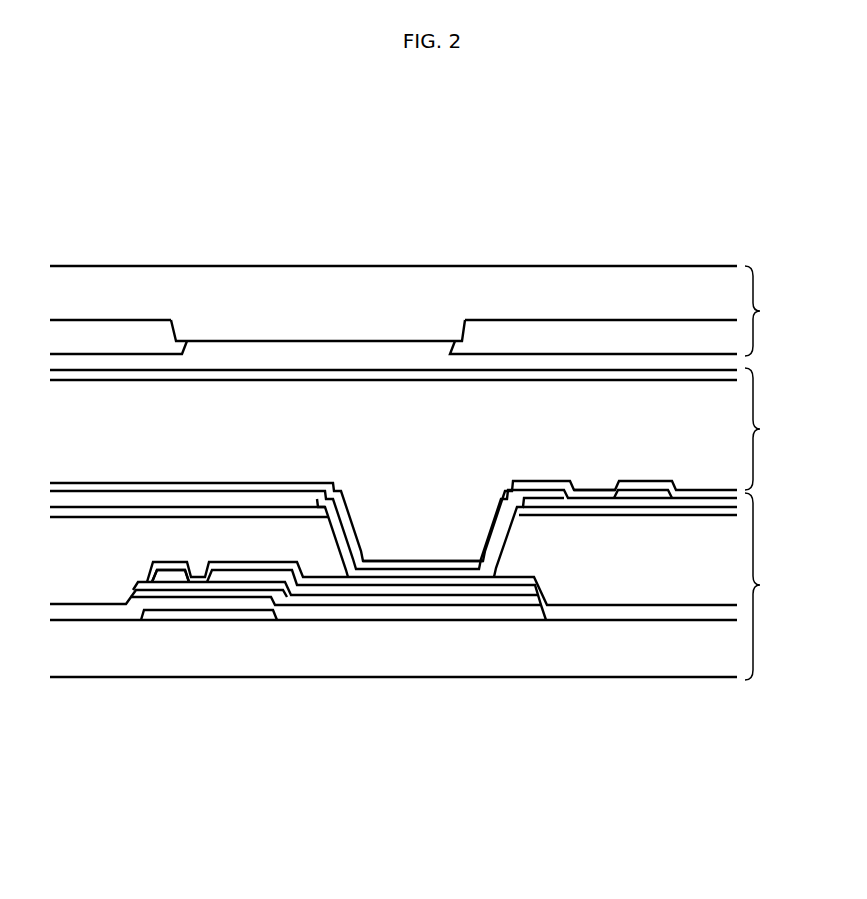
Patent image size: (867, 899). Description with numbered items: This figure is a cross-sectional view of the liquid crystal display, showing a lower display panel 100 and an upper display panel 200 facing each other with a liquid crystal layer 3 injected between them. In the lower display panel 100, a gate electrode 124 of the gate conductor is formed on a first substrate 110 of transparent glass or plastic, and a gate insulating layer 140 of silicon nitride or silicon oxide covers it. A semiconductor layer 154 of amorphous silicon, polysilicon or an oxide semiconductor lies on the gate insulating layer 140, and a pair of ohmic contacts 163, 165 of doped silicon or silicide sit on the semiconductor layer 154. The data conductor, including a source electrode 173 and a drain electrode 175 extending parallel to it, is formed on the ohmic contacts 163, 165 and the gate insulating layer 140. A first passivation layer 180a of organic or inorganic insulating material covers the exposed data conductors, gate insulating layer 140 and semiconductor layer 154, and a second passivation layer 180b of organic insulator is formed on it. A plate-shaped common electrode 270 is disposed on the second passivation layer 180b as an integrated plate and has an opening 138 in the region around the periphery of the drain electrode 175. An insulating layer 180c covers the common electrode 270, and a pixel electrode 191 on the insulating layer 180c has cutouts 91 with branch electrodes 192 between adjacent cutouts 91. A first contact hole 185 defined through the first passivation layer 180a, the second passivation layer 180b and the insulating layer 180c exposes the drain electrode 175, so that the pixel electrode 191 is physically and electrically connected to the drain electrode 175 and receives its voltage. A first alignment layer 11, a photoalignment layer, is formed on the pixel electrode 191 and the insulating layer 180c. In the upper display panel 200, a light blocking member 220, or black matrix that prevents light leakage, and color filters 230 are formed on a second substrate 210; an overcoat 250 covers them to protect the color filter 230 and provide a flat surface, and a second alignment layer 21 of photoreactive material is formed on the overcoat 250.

The second substrate 210 is at (640, 287).
The color filter 230 is at (120, 335).
The light blocking member 220 is at (232, 330).
The overcoat 250 is at (355, 355).
The upper display panel 200 is at (771, 311).
The second alignment layer 21 is at (257, 380).
The liquid crystal layer 3 is at (764, 429).
The lower display panel 100 is at (771, 586).
The first alignment layer 11 is at (78, 481).
The pixel electrode 191 is at (548, 494).
The branch electrode 192 is at (641, 488).
The cutout 91 is at (600, 488).
The opening 138 is at (325, 500).
The insulating layer 180c is at (710, 500).
The common electrode 270 is at (670, 516).
The second passivation layer 180b is at (630, 576).
The first contact hole 185 is at (366, 578).
The first passivation layer 180a is at (560, 608).
The drain electrode 175 is at (486, 594).
The source electrode 173 is at (177, 575).
The ohmic contact 163 is at (165, 578).
The ohmic contact 165 is at (418, 597).
The semiconductor layer 154 is at (307, 604).
The gate insulating layer 140 is at (93, 622).
The gate electrode 124 is at (200, 621).
The first substrate 110 is at (709, 657).